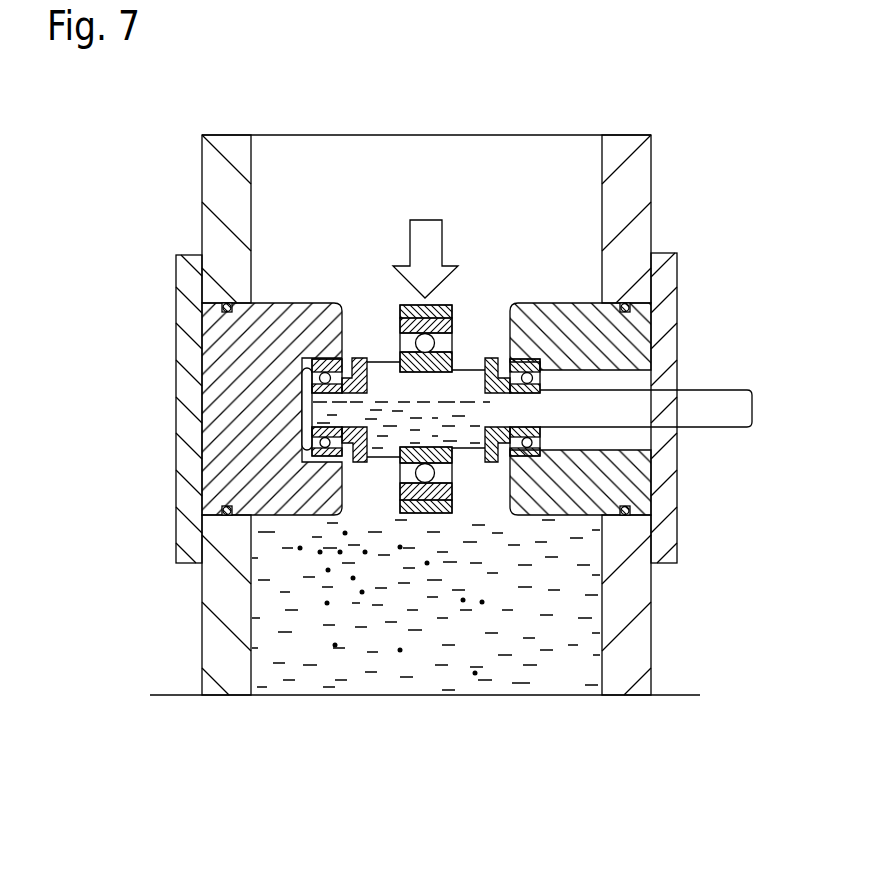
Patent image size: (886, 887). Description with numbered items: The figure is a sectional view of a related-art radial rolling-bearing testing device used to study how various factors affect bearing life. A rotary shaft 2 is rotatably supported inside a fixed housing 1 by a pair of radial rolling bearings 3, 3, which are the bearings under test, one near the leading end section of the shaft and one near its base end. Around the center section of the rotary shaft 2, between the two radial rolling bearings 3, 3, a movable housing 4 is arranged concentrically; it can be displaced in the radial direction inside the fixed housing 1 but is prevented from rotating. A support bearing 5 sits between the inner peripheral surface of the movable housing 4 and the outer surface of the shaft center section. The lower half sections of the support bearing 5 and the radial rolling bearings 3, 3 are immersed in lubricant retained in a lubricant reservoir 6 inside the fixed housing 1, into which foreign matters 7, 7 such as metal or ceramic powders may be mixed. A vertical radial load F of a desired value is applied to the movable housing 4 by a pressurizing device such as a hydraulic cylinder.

The fixed housing 1 is at (654, 168).
The rotary shaft 2 is at (716, 398).
The radial rolling bearing 3 is at (340, 362).
The movable housing 4 is at (441, 315).
The support bearing 5 is at (428, 344).
The lubricant reservoir 6 is at (553, 694).
The foreign matters 7 is at (475, 674).
The radial load F is at (443, 232).